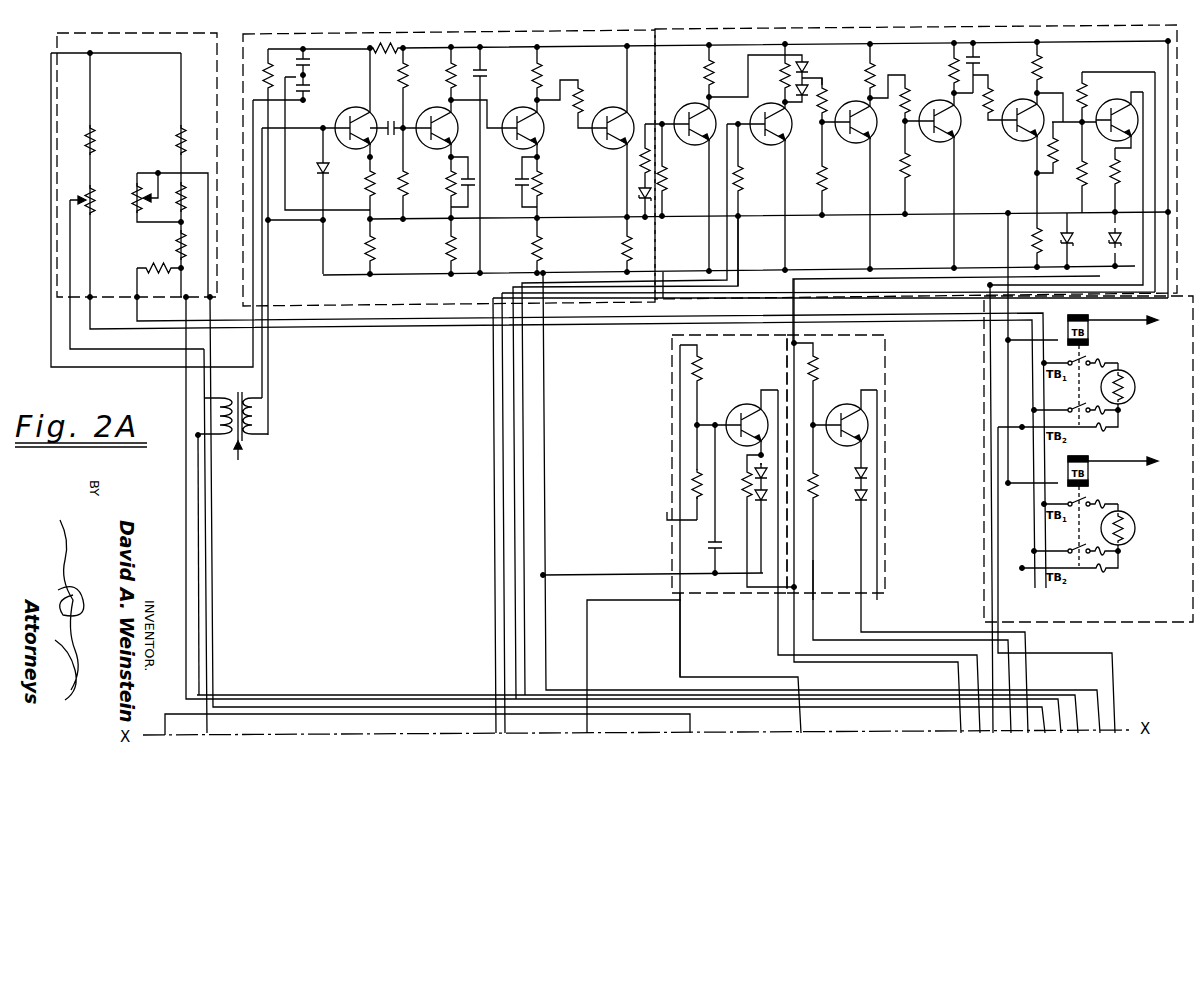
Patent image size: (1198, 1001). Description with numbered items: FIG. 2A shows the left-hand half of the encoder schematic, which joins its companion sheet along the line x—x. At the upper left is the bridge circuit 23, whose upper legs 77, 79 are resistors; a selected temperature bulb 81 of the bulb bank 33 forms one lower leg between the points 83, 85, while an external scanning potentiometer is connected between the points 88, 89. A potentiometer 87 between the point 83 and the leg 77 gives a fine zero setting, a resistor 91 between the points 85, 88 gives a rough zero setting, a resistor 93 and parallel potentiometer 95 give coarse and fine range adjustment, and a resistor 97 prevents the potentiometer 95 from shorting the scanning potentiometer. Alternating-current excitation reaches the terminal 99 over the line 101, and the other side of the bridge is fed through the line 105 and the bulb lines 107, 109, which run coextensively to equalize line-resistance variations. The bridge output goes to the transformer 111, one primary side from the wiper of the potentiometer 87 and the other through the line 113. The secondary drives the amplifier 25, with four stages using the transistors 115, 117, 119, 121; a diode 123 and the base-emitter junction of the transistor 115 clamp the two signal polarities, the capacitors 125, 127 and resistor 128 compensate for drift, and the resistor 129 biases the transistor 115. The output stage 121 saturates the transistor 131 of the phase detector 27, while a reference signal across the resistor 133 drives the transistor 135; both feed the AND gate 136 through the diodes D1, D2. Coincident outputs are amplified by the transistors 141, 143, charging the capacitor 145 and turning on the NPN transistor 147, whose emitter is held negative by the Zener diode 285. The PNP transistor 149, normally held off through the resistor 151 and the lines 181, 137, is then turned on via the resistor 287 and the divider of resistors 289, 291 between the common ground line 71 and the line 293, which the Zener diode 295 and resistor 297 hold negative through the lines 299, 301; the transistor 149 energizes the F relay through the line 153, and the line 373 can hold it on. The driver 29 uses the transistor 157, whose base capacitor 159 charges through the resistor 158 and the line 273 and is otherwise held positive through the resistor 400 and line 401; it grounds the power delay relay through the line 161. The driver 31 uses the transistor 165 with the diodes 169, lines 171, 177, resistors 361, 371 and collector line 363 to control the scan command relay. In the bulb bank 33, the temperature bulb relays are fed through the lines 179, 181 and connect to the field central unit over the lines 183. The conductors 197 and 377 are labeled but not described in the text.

The bridge circuit 23 is at (84, 31).
The amplifier 25 is at (406, 30).
The phase detecting and amplifying circuit 27 is at (814, 28).
The driver 29 is at (668, 558).
The driver 31 is at (886, 364).
The bank of temperature bulbs 33 is at (1120, 625).
The common ground line 71 is at (988, 268).
The upper leg 77 is at (94, 134).
The upper leg 79 is at (176, 134).
The temperature bulb 81 is at (1124, 378).
The point 83 is at (94, 304).
The point 85 is at (141, 304).
The potentiometer 87 is at (94, 210).
The point 88 is at (189, 303).
The point 89 is at (214, 303).
The resistor 91 is at (152, 262).
The resistor 93 is at (184, 200).
The potentiometer 95 is at (133, 192).
The resistor 97 is at (177, 246).
The terminal 99 is at (92, 57).
The line 101 is at (145, 366).
The line 105 is at (1102, 430).
The line 107 is at (1098, 360).
The line 109 is at (1099, 406).
The transformer 111 is at (239, 462).
The line 113 is at (197, 455).
The transistor 115 is at (336, 117).
The transistor 117 is at (436, 110).
The transistor 119 is at (522, 110).
The transistor 121 is at (613, 110).
The diode 123 is at (328, 174).
The capacitor 125 is at (312, 62).
The capacitor 127 is at (312, 88).
The resistor 128 is at (312, 86).
The resistor 129 is at (258, 78).
The transistor 131 is at (688, 104).
The resistor 133 is at (744, 180).
The transistor 135 is at (772, 104).
The AND gate 136 is at (810, 63).
The diode D1 is at (810, 68).
The diode D2 is at (805, 104).
The line 137 is at (513, 414).
The transistor 141 is at (858, 102).
The transistor 143 is at (932, 102).
The capacitor 145 is at (980, 62).
The NPN transistor 147 is at (1018, 102).
The PNP transistor 149 is at (1122, 102).
The resistor 151 is at (1078, 184).
The line 153 is at (1156, 72).
The transistor 157 is at (743, 406).
The resistor 158 is at (704, 368).
The capacitor 159 is at (712, 550).
The line 161 is at (778, 628).
The transistor 165 is at (843, 406).
The diodes 169 is at (856, 480).
The line 171 is at (918, 630).
The line 177 is at (825, 594).
The line 179 is at (522, 434).
The line 181 is at (845, 219).
The lines 183 is at (1136, 322).
The conductor 197 is at (740, 250).
The line 273 is at (746, 676).
The Zener diode 285 is at (1072, 242).
The resistor 287 is at (1046, 152).
The resistor 289 is at (1032, 246).
The resistor 291 is at (1043, 62).
The line 293 is at (895, 47).
The Zener type diode 295 is at (1112, 255).
The resistor 297 is at (1112, 162).
The lines 299 is at (1102, 277).
The line 301 is at (798, 620).
The resistor 361 is at (820, 368).
The line 363 is at (876, 602).
The resistor 371 is at (816, 483).
The line 373 is at (493, 358).
The resistor 377 is at (1078, 90).
The resistor 400 is at (715, 500).
The line 401 is at (665, 268).